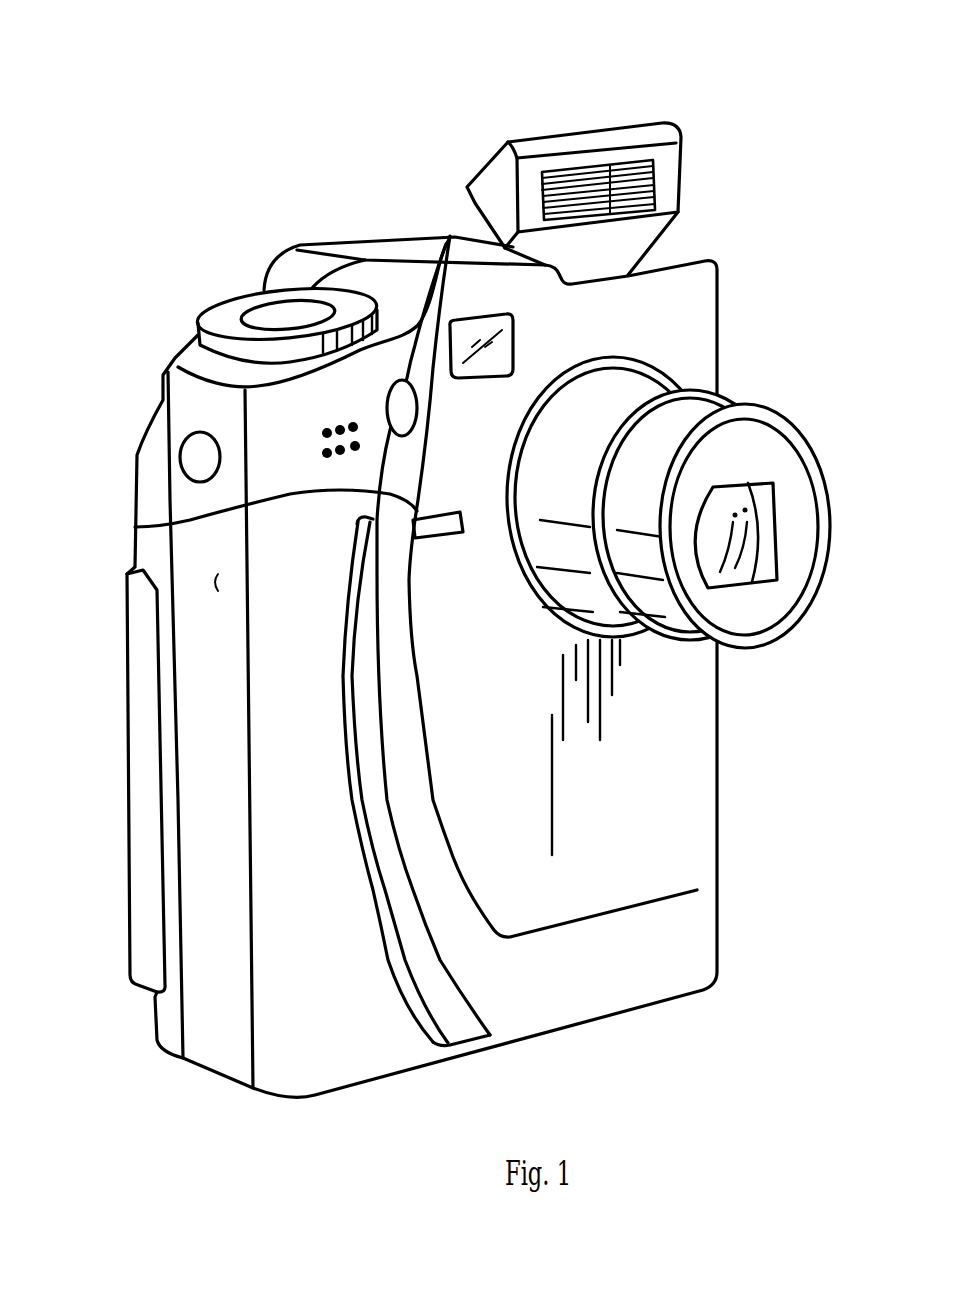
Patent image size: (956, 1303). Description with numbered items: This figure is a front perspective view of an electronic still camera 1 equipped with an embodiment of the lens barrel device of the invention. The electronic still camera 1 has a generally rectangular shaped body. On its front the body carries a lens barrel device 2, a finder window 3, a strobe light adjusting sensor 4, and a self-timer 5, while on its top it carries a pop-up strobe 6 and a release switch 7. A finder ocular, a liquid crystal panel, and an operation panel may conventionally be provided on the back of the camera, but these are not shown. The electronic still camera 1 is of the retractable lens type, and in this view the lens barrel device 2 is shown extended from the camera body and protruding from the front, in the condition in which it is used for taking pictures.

The electronic still camera 1 is at (182, 164).
The lens barrel device 2 is at (755, 393).
The finder window 3 is at (477, 315).
The strobe light adjusting sensor 4 is at (403, 398).
The self-timer 5 is at (135, 527).
The pop-up strobe 6 is at (625, 133).
The release switch 7 is at (266, 318).